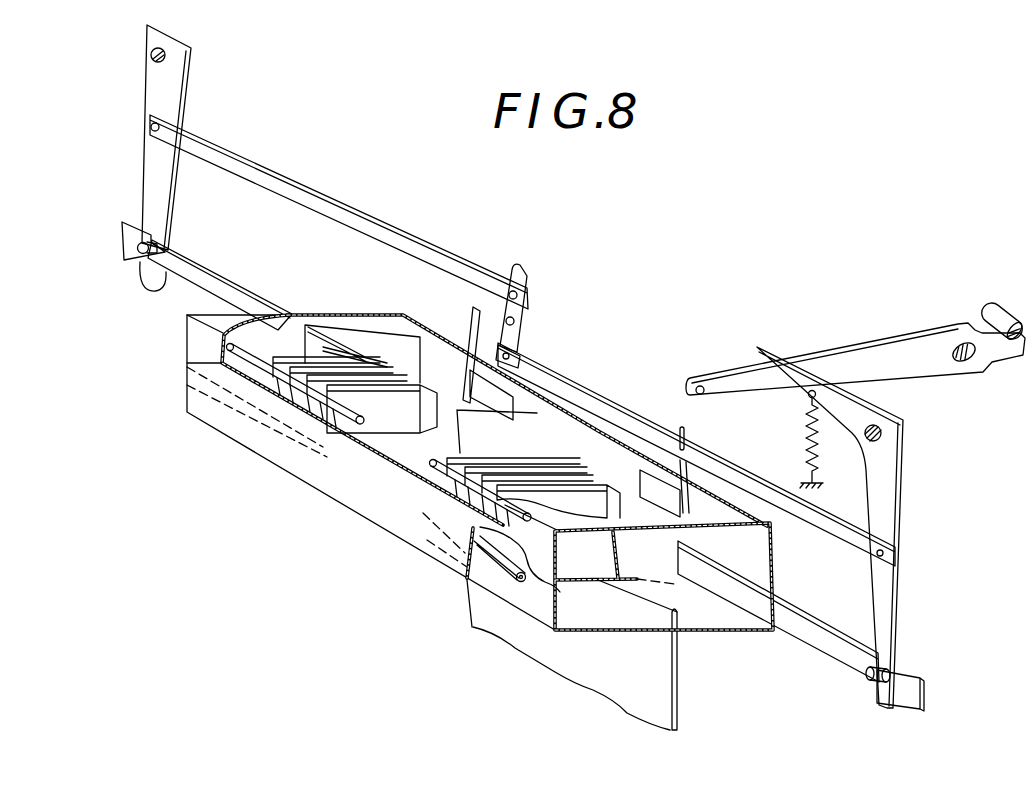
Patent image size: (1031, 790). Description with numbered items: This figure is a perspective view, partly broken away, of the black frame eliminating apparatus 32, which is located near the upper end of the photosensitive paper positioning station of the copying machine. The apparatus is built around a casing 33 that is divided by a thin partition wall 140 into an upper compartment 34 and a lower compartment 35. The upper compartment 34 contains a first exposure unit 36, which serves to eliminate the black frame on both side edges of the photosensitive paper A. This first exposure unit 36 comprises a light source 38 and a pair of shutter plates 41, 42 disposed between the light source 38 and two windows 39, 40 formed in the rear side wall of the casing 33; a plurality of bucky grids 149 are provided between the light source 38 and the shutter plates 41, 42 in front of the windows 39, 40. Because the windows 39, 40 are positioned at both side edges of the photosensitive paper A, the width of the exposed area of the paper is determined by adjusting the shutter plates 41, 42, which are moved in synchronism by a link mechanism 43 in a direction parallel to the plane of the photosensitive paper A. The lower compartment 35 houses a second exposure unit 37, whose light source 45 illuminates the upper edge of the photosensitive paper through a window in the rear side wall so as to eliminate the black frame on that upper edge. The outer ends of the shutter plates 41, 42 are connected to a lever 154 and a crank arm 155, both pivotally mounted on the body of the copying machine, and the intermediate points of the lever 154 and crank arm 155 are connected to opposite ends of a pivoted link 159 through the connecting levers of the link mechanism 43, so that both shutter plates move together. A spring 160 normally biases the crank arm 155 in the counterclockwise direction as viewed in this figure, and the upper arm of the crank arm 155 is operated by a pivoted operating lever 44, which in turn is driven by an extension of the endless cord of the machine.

The black frame eliminating apparatus 32 is at (230, 445).
The casing 33 is at (293, 467).
The upper compartment 34 is at (387, 447).
The lower compartment 35 is at (482, 580).
The first exposure unit 36 is at (267, 350).
The second exposure unit 37 is at (517, 597).
The light source 38 is at (263, 373).
The window 39 is at (480, 393).
The window 40 is at (672, 490).
The shutter plate 41 is at (203, 280).
The shutter plate 42 is at (797, 627).
The link mechanism 43 is at (455, 267).
The operating lever 44 is at (932, 370).
The light source 45 is at (468, 550).
The partition wall 140 is at (220, 387).
The bucky grids 149 is at (315, 360).
The lever 154 is at (153, 170).
The crank arm 155 is at (888, 520).
The pivoted link 159 is at (523, 317).
The spring 160 is at (818, 460).
The photosensitive paper A is at (613, 392).